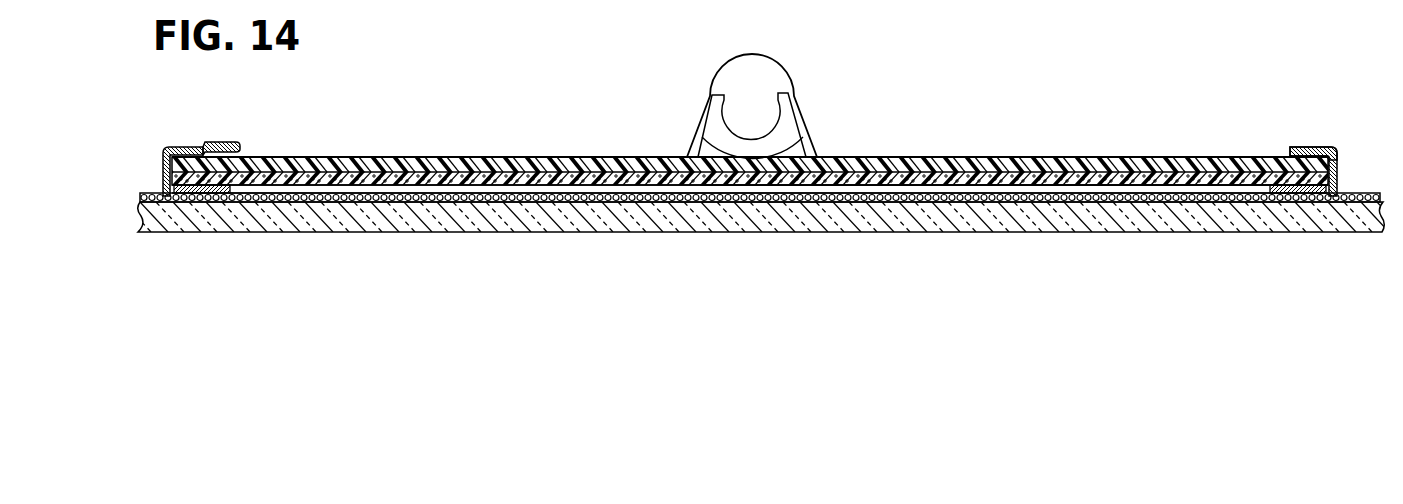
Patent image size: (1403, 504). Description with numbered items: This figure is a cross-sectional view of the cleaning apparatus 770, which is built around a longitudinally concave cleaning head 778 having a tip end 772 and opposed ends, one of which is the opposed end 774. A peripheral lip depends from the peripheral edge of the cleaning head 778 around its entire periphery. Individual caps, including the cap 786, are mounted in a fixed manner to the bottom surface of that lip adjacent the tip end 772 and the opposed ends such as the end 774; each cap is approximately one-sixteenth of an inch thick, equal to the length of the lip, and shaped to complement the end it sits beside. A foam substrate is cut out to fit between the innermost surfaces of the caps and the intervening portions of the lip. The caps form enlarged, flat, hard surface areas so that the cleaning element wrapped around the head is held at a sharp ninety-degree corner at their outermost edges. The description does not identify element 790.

The cleaning apparatus 770 is at (951, 140).
The tip end 772 is at (1334, 150).
The opposed end 774 is at (168, 150).
The cleaning head 778 is at (1216, 157).
The cap 786 is at (527, 0).
The beaded backing layer 790 is at (986, 201).